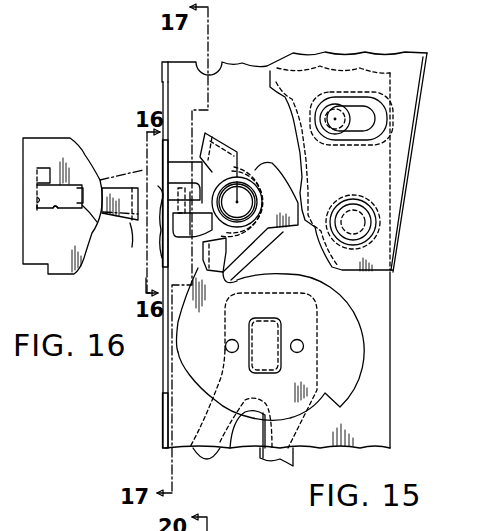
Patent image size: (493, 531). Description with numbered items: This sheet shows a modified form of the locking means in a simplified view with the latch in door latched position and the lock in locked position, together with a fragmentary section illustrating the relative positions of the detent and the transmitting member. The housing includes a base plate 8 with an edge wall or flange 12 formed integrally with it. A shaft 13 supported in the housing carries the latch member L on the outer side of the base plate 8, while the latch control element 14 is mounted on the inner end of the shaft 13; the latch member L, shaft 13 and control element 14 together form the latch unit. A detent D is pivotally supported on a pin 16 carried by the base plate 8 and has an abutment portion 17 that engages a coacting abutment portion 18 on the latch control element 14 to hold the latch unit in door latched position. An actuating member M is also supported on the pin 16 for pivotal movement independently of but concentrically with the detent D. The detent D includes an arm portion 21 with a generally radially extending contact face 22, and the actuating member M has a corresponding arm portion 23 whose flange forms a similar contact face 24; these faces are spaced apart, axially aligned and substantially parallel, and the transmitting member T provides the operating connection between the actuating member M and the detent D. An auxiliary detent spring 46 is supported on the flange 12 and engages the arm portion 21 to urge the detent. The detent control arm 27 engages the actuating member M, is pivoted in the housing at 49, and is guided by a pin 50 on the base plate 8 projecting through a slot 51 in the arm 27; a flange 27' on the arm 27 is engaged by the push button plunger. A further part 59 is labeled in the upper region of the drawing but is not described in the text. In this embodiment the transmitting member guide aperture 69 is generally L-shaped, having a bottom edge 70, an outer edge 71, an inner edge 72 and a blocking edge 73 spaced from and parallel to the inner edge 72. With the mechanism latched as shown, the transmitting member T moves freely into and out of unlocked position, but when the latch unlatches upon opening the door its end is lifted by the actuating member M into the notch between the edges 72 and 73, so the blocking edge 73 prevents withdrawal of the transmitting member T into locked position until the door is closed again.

In FIG. 15, the base plate 8 is at (377, 337).
In FIG. 15, the edge wall or flange 12 is at (160, 422).
In FIG. 15, the shaft 13 is at (268, 330).
In FIG. 15, the latch control element 14 is at (176, 346).
In FIG. 15, the pin 16 is at (245, 172).
In FIG. 15, the abutment portion 17 is at (203, 295).
In FIG. 15, the abutment portion 18 is at (240, 270).
In FIG. 15, the arm portion 21 is at (180, 160).
In FIG. 16, the arm portion 21 is at (37, 176).
In FIG. 15, the contact face 22 is at (159, 213).
In FIG. 16, the contact face 22 is at (37, 191).
In FIG. 15, the arm portion 23 is at (184, 224).
In FIG. 15, the contact face 24 is at (186, 222).
In FIG. 15, the detent control arm 27 is at (420, 163).
In FIG. 15, the flange 27' is at (431, 162).
In FIG. 15, the auxiliary detent spring 46 is at (218, 142).
In FIG. 15, the pivotal support 49 is at (352, 207).
In FIG. 15, the pin 50 is at (325, 128).
In FIG. 15, the slot 51 is at (360, 127).
In FIG. 15, the cam plate 59 is at (287, 108).
In FIG. 15, the transmitting member guide aperture 69 is at (139, 285).
In FIG. 16, the transmitting member guide aperture 69 is at (65, 193).
In FIG. 16, the bottom edge 70 is at (55, 210).
In FIG. 16, the outer edge 71 is at (103, 217).
In FIG. 16, the inner edge 72 is at (37, 208).
In FIG. 16, the blocking edge 73 is at (58, 171).
In FIG. 15, the detent D is at (207, 158).
In FIG. 15, the actuating member M is at (272, 233).
In FIG. 15, the latch member L is at (256, 452).
In FIG. 16, the transmitting member T is at (132, 243).